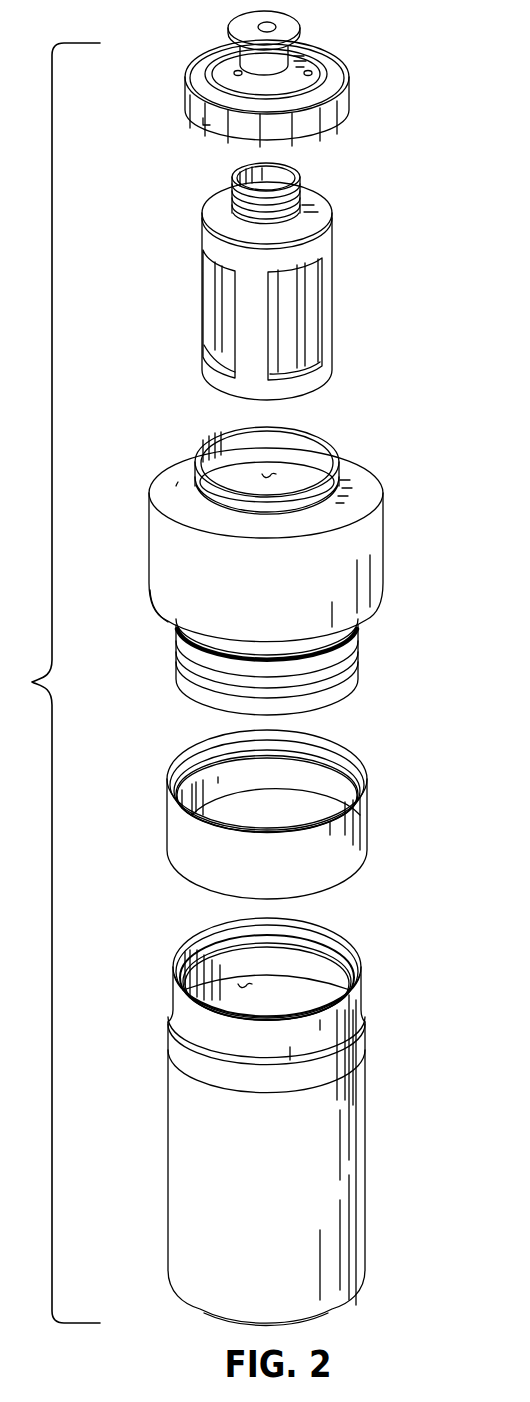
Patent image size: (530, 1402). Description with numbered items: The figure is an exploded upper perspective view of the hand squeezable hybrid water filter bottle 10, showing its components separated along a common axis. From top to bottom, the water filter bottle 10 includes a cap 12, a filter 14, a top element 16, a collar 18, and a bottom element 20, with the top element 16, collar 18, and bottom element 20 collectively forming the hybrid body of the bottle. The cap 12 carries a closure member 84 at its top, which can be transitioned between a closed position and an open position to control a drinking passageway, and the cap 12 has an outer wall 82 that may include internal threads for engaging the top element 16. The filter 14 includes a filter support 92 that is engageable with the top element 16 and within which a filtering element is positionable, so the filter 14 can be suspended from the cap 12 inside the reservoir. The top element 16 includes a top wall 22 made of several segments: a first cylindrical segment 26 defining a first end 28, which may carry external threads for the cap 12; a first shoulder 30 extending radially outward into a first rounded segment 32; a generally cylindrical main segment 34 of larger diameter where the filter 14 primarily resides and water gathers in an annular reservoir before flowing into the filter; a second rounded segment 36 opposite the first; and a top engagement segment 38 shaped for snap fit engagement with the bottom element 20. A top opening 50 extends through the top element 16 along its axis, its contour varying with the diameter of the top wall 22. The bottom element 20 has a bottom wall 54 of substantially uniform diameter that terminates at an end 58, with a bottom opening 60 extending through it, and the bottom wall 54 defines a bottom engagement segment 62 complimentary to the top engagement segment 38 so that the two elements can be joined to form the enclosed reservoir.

The water filter bottle 10 is at (51, 683).
The cap 12 is at (313, 78).
The closure member 84 is at (293, 31).
The outer wall 82 is at (330, 115).
The filter 14 is at (270, 281).
The filter support 92 is at (200, 232).
The top element 16 is at (294, 559).
The top opening 50 is at (270, 474).
The first end 28 is at (317, 438).
The first shoulder 30 is at (185, 473).
The first cylindrical segment 26 is at (309, 459).
The first rounded segment 32 is at (162, 497).
The top wall 22 is at (311, 567).
The main segment 34 is at (370, 562).
The second rounded segment 36 is at (377, 612).
The top engagement segment 38 is at (172, 657).
The collar 18 is at (380, 795).
The bottom element 20 is at (307, 1120).
The bottom opening 60 is at (245, 985).
The end 58 is at (348, 945).
The bottom engagement segment 62 is at (352, 1005).
The bottom wall 54 is at (347, 1153).